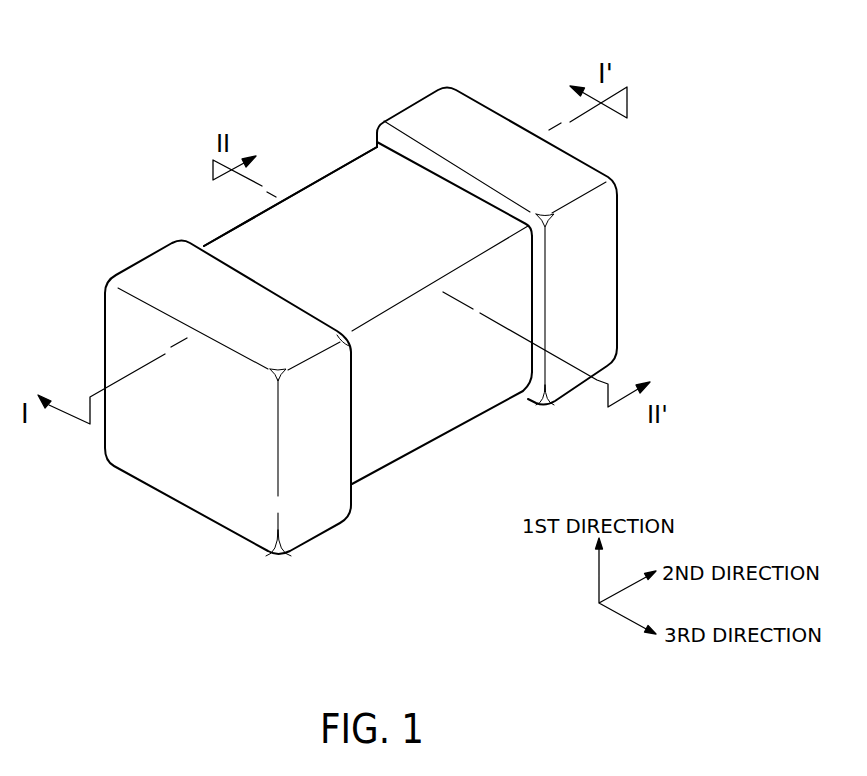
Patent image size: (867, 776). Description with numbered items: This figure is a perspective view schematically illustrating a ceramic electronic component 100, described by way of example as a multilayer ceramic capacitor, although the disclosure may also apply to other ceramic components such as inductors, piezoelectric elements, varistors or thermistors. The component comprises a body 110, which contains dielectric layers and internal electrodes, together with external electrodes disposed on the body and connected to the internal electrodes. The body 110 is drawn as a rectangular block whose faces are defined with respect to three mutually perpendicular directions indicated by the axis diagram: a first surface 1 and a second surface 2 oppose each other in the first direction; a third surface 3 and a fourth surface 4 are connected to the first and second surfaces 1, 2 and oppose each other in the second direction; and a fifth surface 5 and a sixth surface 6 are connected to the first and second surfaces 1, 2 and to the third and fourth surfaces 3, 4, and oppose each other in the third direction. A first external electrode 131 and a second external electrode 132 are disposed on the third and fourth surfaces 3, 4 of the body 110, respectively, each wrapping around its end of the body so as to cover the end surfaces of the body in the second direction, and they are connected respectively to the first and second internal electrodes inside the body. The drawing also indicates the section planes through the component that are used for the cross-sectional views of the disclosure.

The ceramic electronic component 100 is at (141, 56).
The body 110 is at (243, 253).
The first external electrode 131 is at (163, 268).
The second external electrode 132 is at (418, 122).
The first surface 1 is at (407, 412).
The second surface 2 is at (374, 198).
The third surface 3 is at (193, 460).
The fourth surface 4 is at (577, 259).
The fifth surface 5 is at (313, 218).
The sixth surface 6 is at (466, 386).